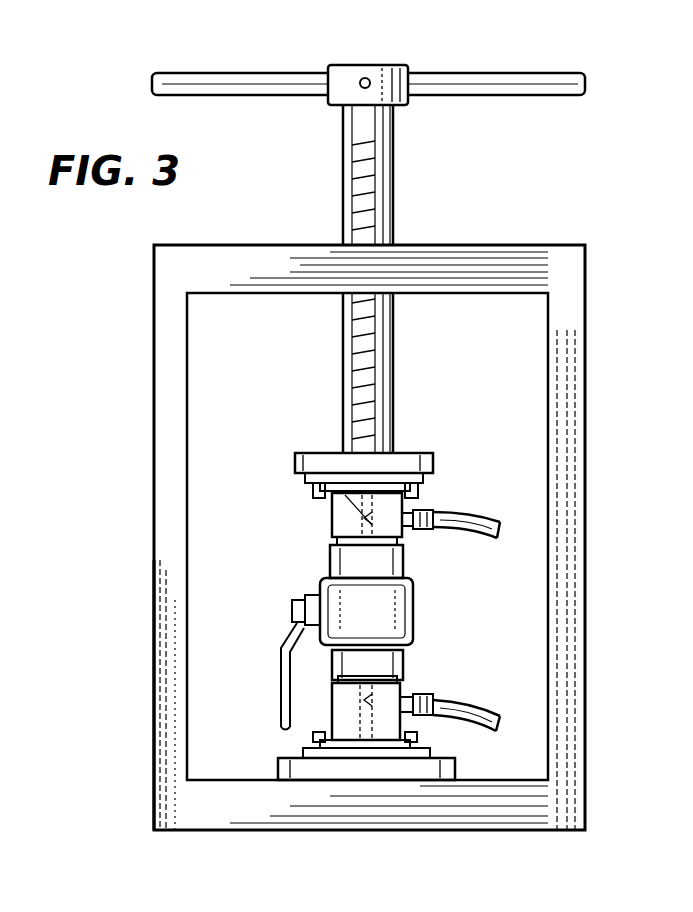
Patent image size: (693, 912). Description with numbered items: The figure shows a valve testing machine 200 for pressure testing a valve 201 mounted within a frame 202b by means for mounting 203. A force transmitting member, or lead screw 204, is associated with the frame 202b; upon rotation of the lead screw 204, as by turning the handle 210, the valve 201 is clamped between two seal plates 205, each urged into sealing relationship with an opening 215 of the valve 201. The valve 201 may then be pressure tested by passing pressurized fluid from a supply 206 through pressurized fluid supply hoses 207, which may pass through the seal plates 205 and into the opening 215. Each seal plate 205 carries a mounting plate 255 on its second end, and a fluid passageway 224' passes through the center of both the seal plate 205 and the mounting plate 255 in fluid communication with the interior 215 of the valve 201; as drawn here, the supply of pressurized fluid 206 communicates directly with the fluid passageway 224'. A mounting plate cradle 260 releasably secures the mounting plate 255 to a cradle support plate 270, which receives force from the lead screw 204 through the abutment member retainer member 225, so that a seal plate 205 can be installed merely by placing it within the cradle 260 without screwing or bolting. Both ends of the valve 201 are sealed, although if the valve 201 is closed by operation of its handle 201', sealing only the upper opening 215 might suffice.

The valve testing machine 200 is at (455, 232).
The valve 201 is at (419, 611).
The handle 201' is at (188, 681).
The frame 202b is at (158, 678).
The means for mounting 203 is at (190, 408).
The lead screw 204 is at (393, 162).
The seal plate 205 is at (332, 513).
The supply of pressurized fluid 206 is at (458, 513).
The pressurized fluid supply hose 207 is at (500, 527).
The handle 210 is at (455, 73).
The opening 215 is at (332, 560).
The fluid passageway 224' is at (214, 535).
The abutment member retainer member 225 is at (400, 460).
The mounting plate 255 is at (420, 487).
The mounting plate cradle 260 is at (425, 478).
The cradle support plate 270 is at (305, 478).